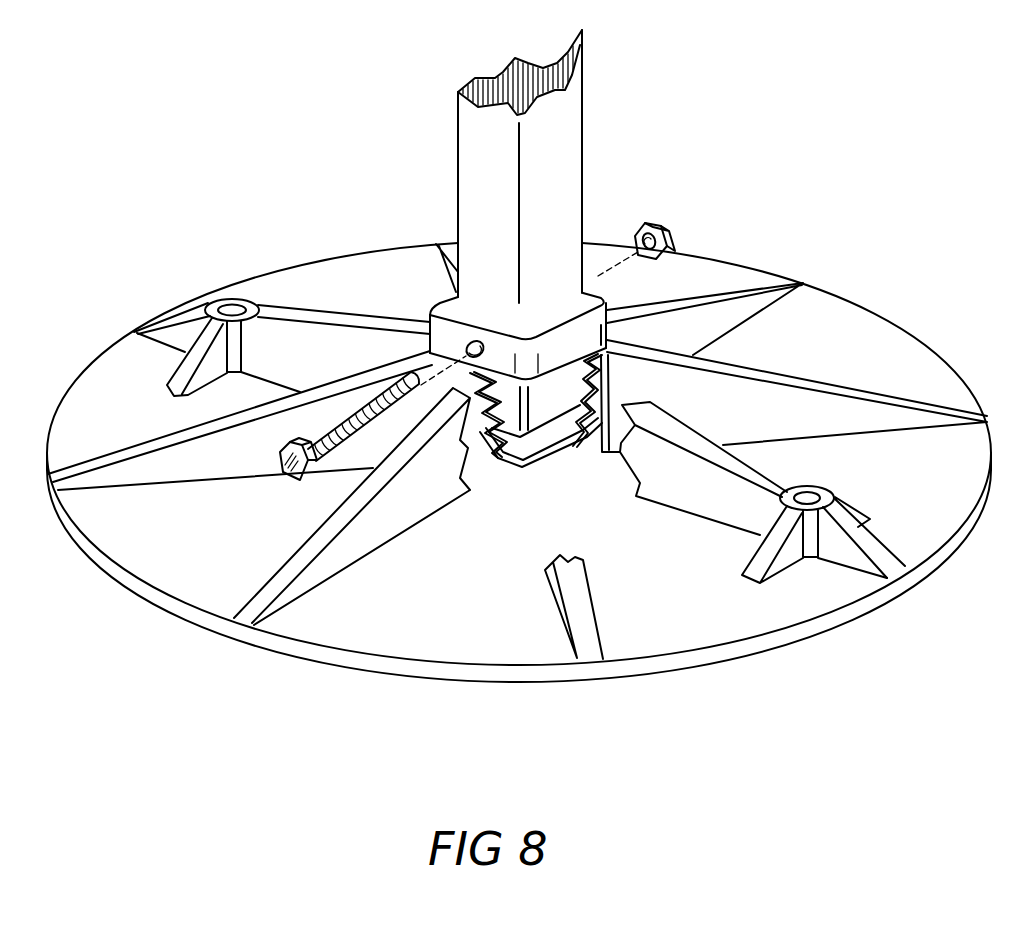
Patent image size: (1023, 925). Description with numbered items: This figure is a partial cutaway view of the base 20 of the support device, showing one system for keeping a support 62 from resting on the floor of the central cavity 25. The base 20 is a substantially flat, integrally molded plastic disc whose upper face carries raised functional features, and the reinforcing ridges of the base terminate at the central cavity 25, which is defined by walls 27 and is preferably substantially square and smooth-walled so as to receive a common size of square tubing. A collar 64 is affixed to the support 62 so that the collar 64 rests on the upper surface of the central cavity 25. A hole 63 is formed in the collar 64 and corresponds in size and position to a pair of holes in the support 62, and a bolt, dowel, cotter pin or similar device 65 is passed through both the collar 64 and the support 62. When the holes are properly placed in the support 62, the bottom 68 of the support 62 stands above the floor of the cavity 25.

The base 20 is at (418, 629).
The support 62 is at (560, 162).
The hole 63 is at (430, 311).
The collar 64 is at (628, 284).
The bolt, dowel or cotter pin 65 is at (297, 482).
The walls 27 is at (468, 447).
The central cavity 25 is at (575, 445).
The bottom of support 68 is at (508, 445).